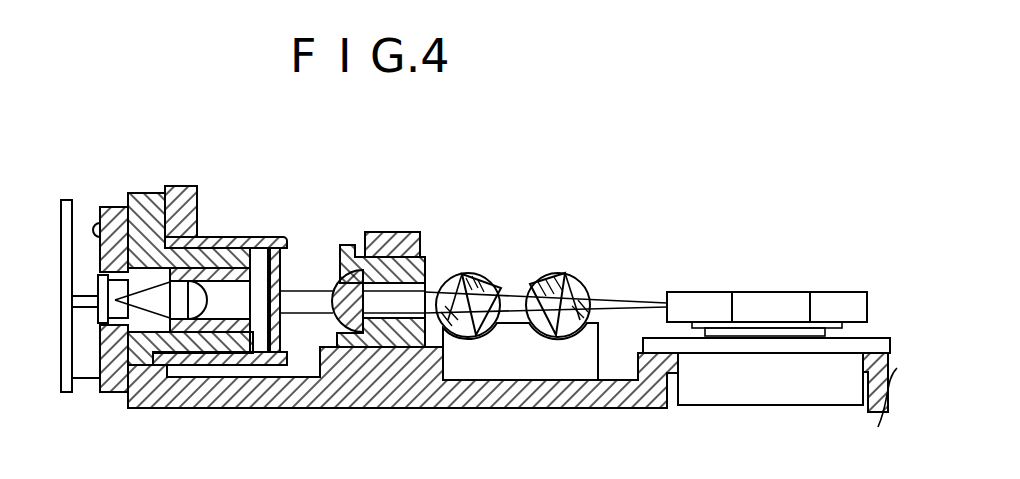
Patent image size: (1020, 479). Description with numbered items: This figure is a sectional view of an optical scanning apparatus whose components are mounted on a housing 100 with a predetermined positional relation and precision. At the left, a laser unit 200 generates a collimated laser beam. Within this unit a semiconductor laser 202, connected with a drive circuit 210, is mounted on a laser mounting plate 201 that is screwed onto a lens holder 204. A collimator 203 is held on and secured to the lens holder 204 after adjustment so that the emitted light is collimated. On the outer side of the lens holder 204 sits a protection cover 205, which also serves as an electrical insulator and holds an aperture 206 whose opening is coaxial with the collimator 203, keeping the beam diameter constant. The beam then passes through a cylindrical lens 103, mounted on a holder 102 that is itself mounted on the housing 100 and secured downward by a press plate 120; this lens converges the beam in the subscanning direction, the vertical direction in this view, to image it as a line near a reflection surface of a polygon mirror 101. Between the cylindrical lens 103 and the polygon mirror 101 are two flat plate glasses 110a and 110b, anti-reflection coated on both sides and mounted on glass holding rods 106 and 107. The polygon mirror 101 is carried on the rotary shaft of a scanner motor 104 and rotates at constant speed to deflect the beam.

The housing 100 is at (513, 408).
The polygon mirror 101 is at (758, 293).
The holder 102 is at (428, 262).
The cylindrical lens 103 is at (333, 287).
The scanner motor 104 is at (782, 402).
The glass holding rod 106 is at (467, 274).
The glass holding rod 107 is at (585, 278).
The flat plate glass 110a is at (483, 278).
The flat plate glass 110b is at (541, 277).
The press plate 120 is at (387, 235).
The laser unit 200 is at (162, 417).
The laser mounting plate 201 is at (107, 384).
The semiconductor laser 202 is at (93, 277).
The collimator 203 is at (240, 333).
The lens holder 204 is at (260, 246).
The protection cover 205 is at (225, 239).
The aperture 206 is at (280, 334).
The drive circuit 210 is at (69, 199).